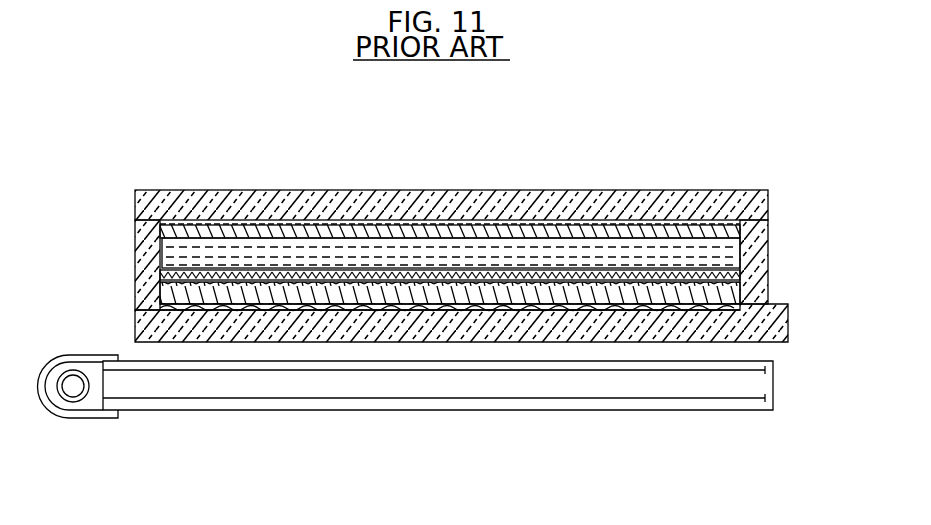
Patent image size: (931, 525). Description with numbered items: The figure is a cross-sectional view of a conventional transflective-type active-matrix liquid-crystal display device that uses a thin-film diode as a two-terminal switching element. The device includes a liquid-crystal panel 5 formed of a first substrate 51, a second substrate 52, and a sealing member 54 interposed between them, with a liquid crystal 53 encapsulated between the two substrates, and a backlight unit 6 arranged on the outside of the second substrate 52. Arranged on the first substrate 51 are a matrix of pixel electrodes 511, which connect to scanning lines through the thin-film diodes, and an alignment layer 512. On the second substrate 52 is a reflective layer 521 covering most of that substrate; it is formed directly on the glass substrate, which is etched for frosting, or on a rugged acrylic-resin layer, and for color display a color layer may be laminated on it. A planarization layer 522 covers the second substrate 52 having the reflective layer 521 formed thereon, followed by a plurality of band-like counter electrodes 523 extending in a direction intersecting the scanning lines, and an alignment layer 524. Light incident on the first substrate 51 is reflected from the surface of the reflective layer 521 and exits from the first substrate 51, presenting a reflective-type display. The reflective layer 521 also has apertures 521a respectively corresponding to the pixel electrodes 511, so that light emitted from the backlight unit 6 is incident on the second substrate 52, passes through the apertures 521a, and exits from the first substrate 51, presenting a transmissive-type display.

The liquid-crystal panel 5 is at (444, 261).
The first substrate 51 is at (768, 203).
The second substrate 52 is at (788, 332).
The liquid crystal 53 is at (168, 252).
The sealing member 54 is at (770, 262).
The pixel electrodes 511 is at (383, 222).
The alignment layer 512 is at (445, 222).
The reflective layer 521 is at (295, 310).
The apertures 521a is at (372, 308).
The planarization layer 522 is at (227, 310).
The counter electrodes 523 is at (160, 290).
The alignment layer 524 is at (160, 278).
The backlight unit 6 is at (572, 428).